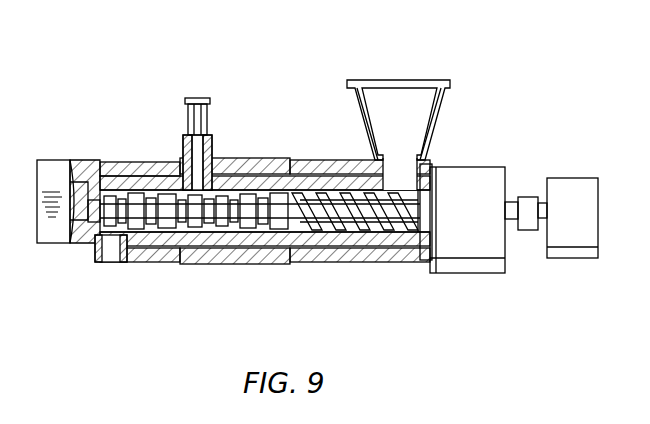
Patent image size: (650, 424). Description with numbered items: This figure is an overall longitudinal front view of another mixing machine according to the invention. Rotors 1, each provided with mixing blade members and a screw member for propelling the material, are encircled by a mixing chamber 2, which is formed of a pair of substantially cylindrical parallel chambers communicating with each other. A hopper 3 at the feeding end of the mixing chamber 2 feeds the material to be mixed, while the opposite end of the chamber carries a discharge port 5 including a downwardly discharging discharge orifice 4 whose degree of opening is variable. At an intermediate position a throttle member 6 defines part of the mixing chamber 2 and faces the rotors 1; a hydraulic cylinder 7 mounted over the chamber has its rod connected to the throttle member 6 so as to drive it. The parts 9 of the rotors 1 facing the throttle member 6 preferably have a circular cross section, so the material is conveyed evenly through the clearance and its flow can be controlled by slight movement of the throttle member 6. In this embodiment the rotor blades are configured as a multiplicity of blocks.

The rotor 1 is at (128, 196).
The mixing chamber 2 is at (100, 158).
The hopper 3 is at (396, 80).
The discharge orifice 4 is at (95, 252).
The discharge port 5 is at (110, 258).
The throttle member 6 is at (210, 155).
The hydraulic cylinder 7 is at (186, 118).
The part of rotor facing throttle member 9 is at (200, 216).